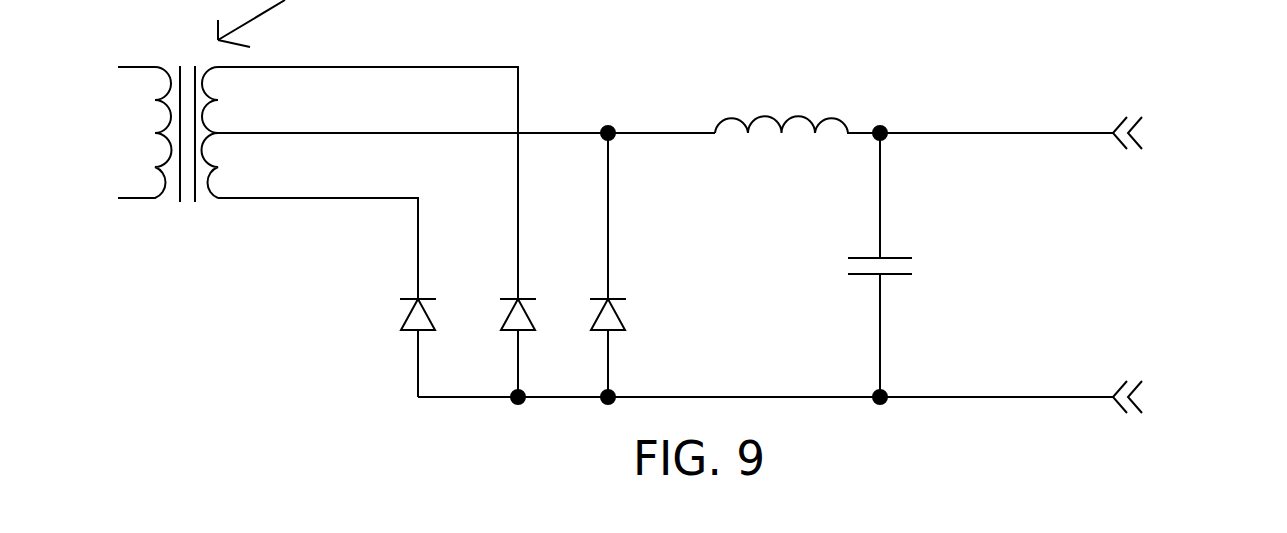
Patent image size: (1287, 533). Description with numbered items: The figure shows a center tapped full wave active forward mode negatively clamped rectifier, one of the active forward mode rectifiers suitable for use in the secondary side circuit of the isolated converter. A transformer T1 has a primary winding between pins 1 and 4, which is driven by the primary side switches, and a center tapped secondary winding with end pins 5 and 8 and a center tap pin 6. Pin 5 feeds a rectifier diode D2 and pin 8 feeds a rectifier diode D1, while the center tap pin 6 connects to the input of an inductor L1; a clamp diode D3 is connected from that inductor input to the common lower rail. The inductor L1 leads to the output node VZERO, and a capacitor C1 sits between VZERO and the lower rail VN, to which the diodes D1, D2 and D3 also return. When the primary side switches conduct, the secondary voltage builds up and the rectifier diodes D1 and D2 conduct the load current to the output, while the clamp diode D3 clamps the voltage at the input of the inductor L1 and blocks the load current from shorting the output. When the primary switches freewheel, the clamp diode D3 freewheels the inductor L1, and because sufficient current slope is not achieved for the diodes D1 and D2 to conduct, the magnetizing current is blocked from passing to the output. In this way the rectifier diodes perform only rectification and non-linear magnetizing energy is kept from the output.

The transformer primary pin 1 is at (124, 54).
The transformer primary pin 4 is at (123, 188).
The transformer secondary pin 5 is at (368, 169).
The transformer secondary center tap pin 6 is at (466, 203).
The transformer secondary pin 8 is at (318, 236).
The transformer T1 is at (168, 117).
The rectifier diode D1 is at (431, 332).
The rectifier diode D2 is at (532, 332).
The clamp diode D3 is at (622, 332).
The inductor L1 is at (893, 116).
The capacitor C1 is at (887, 265).
The output voltage port VZERO is at (1179, 131).
The negative output port VN is at (1149, 394).